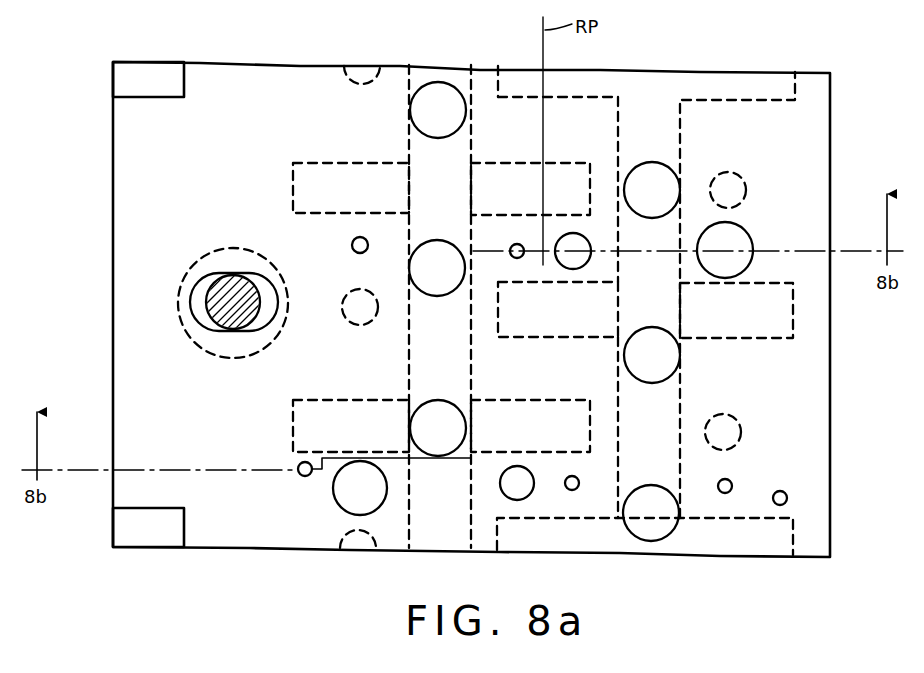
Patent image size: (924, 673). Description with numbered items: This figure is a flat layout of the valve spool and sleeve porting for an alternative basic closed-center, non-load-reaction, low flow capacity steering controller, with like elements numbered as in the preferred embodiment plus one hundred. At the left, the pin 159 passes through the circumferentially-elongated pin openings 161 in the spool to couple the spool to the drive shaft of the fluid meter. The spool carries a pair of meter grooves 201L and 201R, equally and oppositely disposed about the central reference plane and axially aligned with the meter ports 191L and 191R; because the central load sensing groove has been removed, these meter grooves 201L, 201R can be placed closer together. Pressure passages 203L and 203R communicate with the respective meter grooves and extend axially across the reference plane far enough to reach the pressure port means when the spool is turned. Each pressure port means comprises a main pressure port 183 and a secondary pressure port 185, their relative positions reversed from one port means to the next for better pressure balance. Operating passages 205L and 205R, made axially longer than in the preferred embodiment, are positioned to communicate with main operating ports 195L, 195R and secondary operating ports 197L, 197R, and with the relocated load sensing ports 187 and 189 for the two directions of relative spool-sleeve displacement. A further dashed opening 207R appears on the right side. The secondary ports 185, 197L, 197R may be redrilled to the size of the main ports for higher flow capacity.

The pin 159 is at (232, 318).
The pin openings 161 is at (257, 252).
The main pressure port 183 is at (517, 467).
The secondary pressure port 185 is at (571, 476).
The load sensing port 187 is at (299, 474).
The load sensing port 189 is at (808, 482).
The meter ports 191L is at (425, 285).
The meter ports 191R is at (672, 172).
The main operating port 195L is at (342, 490).
The main operating port 195R is at (737, 232).
The secondary operating port 197L is at (352, 244).
The secondary operating port 197R is at (727, 480).
The meter groove 201L is at (409, 368).
The meter groove 201R is at (658, 112).
The pressure passages 203L is at (500, 190).
The pressure passages 203R is at (532, 315).
The operating passage 205L is at (372, 175).
The operating passage 205R is at (728, 318).
The right dashed hole 207R is at (740, 178).